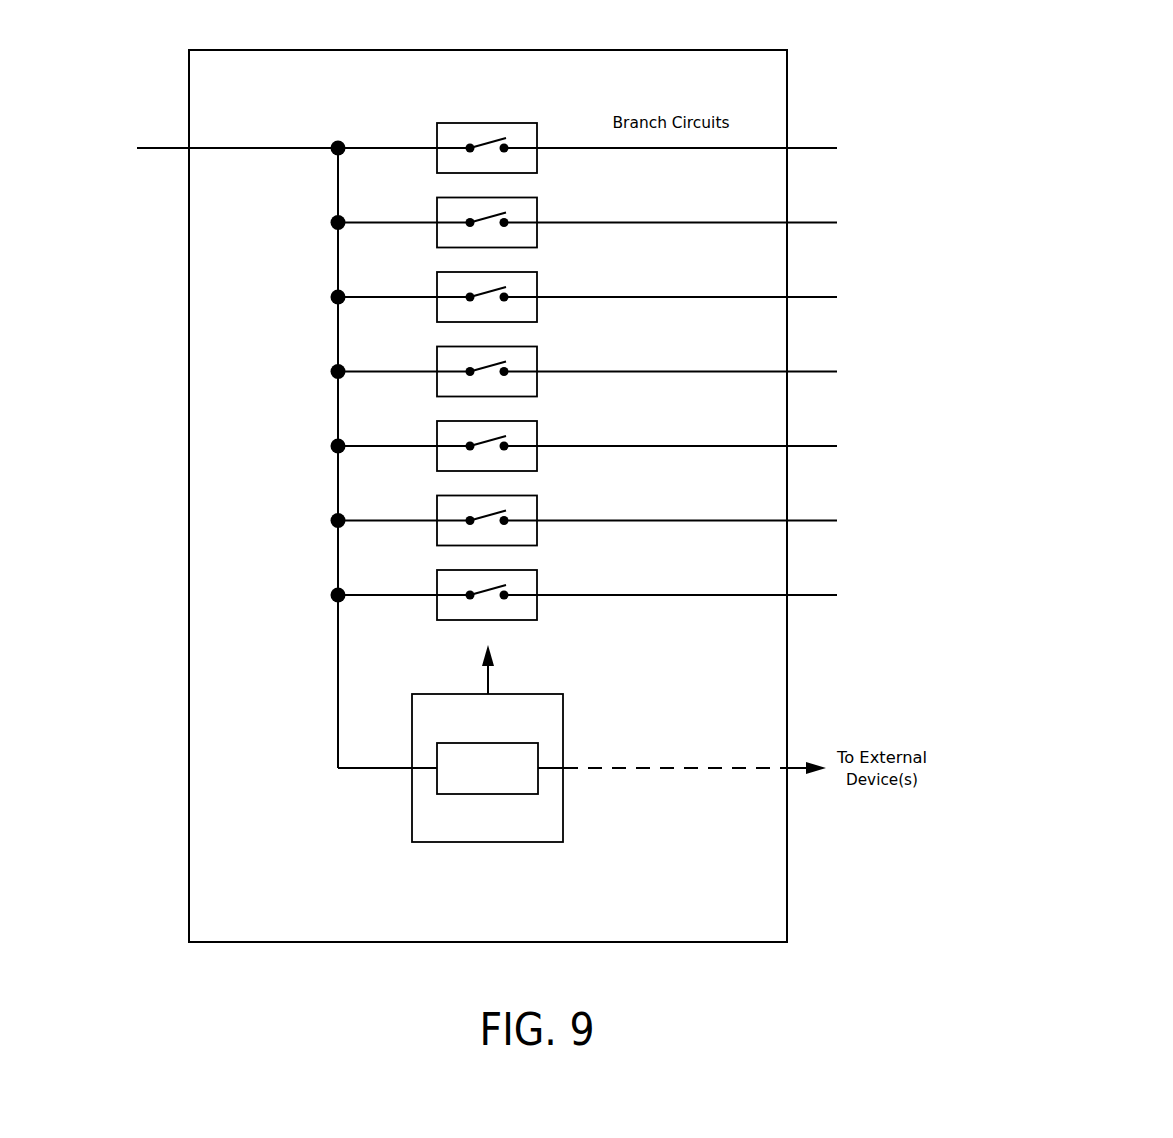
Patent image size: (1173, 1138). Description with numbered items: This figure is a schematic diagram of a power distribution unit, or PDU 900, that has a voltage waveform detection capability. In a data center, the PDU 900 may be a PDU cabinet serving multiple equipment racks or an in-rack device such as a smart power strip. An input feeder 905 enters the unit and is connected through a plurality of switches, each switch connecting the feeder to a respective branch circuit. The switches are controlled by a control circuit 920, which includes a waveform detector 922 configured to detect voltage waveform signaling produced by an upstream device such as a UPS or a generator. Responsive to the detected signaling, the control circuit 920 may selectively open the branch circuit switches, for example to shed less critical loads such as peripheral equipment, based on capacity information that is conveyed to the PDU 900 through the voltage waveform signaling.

The power distribution unit (PDU) 900 is at (487, 50).
The feed 905 is at (300, 150).
The control circuit 920 is at (487, 758).
The waveform detector 922 is at (487, 743).